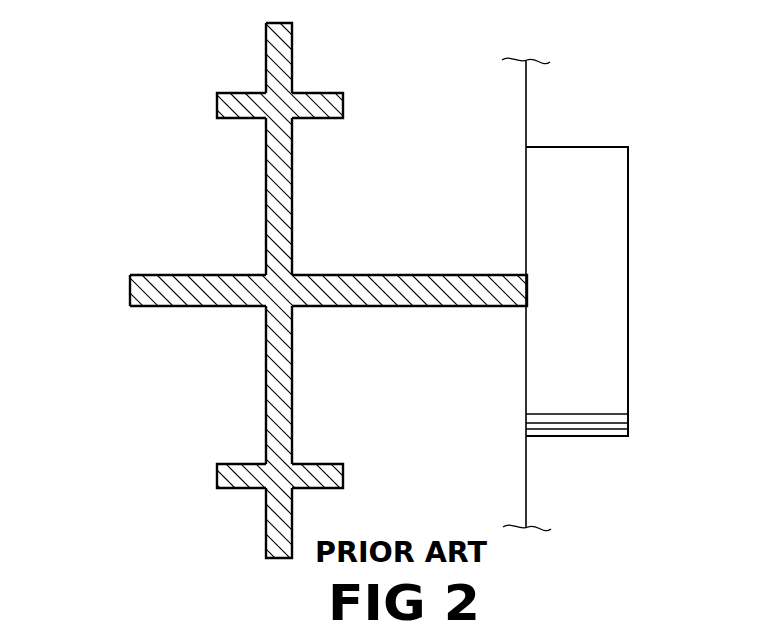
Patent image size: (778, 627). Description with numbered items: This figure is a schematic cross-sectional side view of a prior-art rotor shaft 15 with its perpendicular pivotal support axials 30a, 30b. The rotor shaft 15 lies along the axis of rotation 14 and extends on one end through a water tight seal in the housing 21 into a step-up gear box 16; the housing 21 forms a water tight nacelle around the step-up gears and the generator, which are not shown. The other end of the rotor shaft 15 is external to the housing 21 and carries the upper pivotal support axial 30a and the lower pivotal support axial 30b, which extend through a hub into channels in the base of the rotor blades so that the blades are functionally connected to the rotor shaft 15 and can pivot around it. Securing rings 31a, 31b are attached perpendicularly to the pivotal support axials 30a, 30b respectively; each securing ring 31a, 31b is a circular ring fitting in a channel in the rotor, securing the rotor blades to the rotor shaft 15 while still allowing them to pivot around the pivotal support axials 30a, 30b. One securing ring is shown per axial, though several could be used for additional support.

The axis of rotation 14 is at (130, 295).
The rotor shaft 15 is at (474, 288).
The step-up gear box 16 is at (582, 285).
The housing 21 is at (527, 101).
The pivotal support axial 30a is at (273, 195).
The pivotal support axial 30b is at (278, 381).
The securing ring 31a is at (245, 103).
The securing ring 31b is at (220, 474).